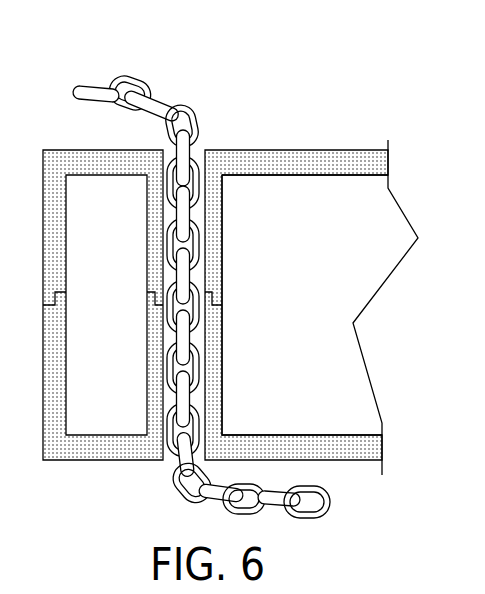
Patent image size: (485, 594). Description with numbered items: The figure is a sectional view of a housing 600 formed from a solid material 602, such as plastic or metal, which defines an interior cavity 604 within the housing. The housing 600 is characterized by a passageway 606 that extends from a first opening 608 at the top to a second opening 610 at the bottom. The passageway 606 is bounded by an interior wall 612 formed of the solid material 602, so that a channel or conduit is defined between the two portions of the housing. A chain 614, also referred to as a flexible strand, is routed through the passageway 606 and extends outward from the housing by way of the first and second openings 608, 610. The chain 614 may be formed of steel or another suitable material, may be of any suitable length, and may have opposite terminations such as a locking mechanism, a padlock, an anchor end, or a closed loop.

The housing 600 is at (300, 56).
The solid material 602 is at (327, 150).
The interior cavity 604 is at (311, 303).
The passageway 606 is at (196, 150).
The first opening 608 is at (167, 149).
The second opening 610 is at (167, 462).
The interior wall 612 is at (172, 389).
The chain 614 is at (132, 78).